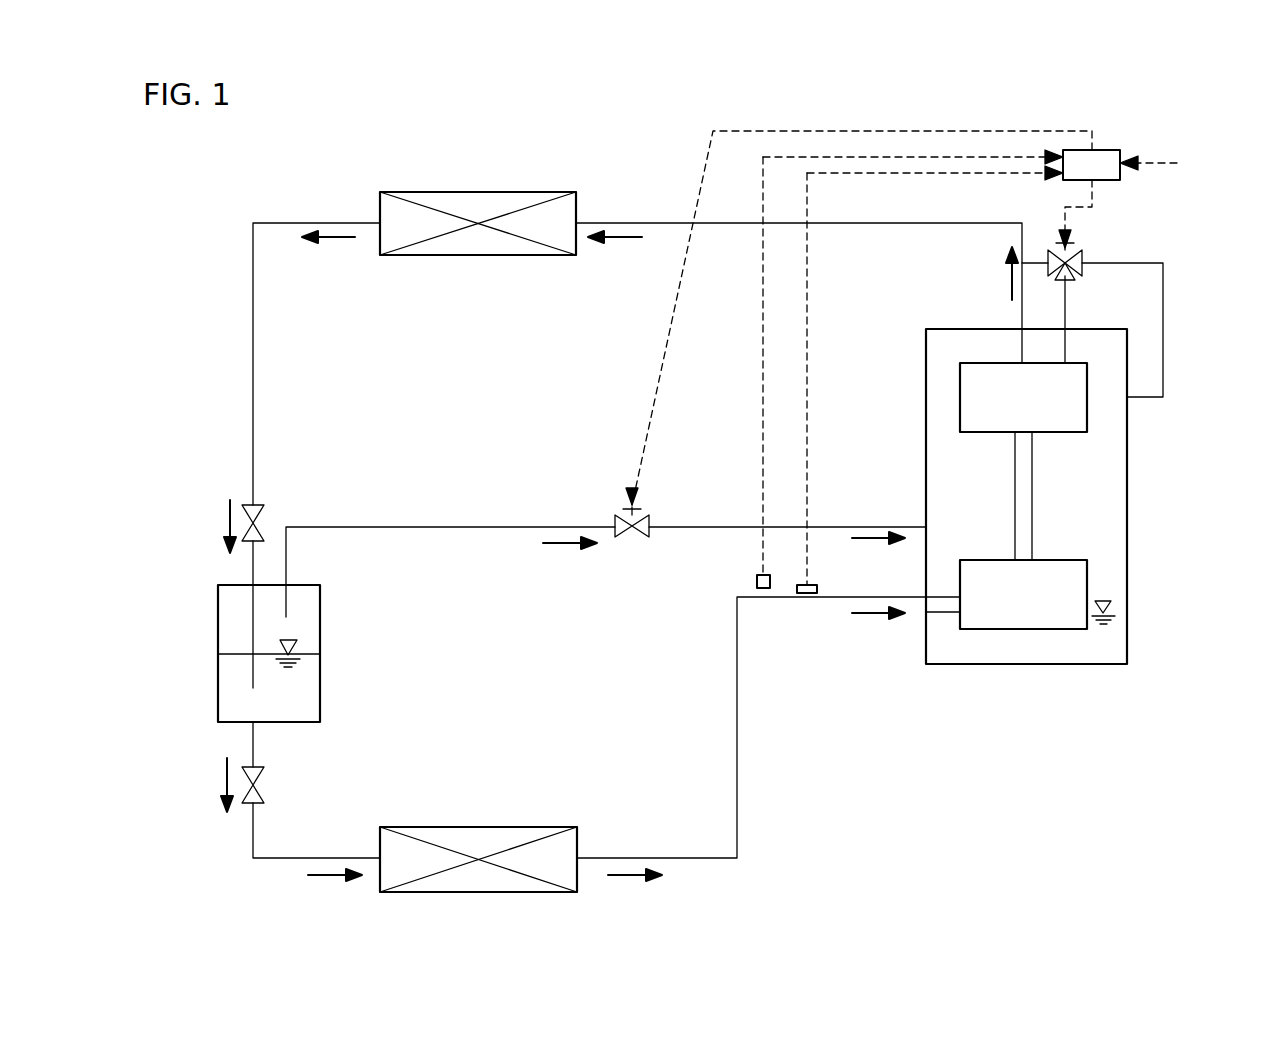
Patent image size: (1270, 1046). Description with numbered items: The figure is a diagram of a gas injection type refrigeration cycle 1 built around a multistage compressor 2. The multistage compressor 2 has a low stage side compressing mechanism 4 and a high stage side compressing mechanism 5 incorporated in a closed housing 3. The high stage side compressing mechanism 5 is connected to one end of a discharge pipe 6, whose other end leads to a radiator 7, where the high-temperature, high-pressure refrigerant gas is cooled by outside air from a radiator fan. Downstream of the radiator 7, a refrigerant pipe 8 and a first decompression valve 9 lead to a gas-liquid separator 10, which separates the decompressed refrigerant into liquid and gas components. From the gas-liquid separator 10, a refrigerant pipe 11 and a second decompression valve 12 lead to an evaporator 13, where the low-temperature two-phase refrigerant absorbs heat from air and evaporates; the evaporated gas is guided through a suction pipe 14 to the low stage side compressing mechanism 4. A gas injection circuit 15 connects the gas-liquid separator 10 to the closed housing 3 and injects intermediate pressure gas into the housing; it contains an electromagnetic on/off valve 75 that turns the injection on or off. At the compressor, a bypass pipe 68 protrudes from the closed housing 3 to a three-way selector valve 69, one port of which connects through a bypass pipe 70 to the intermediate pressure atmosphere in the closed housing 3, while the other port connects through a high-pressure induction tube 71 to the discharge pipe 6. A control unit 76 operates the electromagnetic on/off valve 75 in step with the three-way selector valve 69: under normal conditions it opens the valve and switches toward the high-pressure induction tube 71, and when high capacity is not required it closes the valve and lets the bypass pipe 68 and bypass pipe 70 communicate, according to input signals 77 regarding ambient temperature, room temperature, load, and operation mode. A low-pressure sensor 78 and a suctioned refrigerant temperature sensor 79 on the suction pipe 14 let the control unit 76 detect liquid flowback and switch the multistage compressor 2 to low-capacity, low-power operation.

The refrigeration cycle 1 is at (947, 122).
The multistage compressor 2 is at (1200, 405).
The closed housing 3 is at (1128, 557).
The low stage side compressing mechanism 4 is at (1018, 630).
The high stage side compressing mechanism 5 is at (1063, 432).
The discharge pipe 6 is at (940, 224).
The radiator 7 is at (475, 192).
The refrigerant pipe 8 is at (318, 223).
The first decompression valve 9 is at (263, 514).
The gas-liquid separator 10 is at (218, 628).
The refrigerant pipe 11 is at (253, 838).
The second decompression valve 12 is at (265, 775).
The evaporator 13 is at (483, 827).
The suction pipe 14 is at (737, 733).
The gas injection circuit 15 is at (493, 528).
The bypass pipe 68 is at (1066, 300).
The three-way selector valve 69 is at (1084, 256).
The bypass pipe 70 is at (1163, 292).
The high-pressure induction tube 71 is at (1040, 264).
The electromagnetic on/off valve 75 is at (622, 537).
The control unit 76 is at (1108, 150).
The input signals 77 is at (1159, 160).
The low-pressure sensor 78 is at (757, 578).
The suctioned refrigerant temperature sensor 79 is at (817, 587).